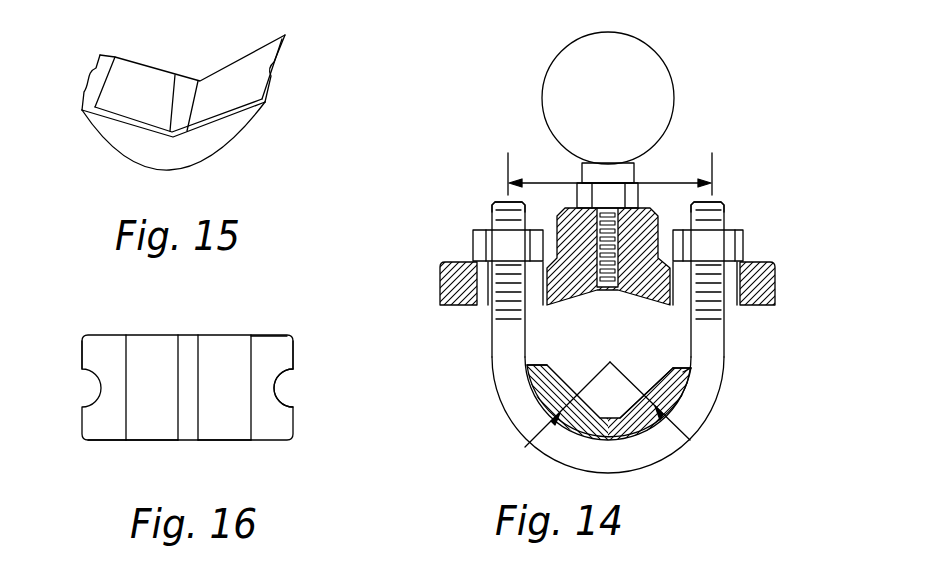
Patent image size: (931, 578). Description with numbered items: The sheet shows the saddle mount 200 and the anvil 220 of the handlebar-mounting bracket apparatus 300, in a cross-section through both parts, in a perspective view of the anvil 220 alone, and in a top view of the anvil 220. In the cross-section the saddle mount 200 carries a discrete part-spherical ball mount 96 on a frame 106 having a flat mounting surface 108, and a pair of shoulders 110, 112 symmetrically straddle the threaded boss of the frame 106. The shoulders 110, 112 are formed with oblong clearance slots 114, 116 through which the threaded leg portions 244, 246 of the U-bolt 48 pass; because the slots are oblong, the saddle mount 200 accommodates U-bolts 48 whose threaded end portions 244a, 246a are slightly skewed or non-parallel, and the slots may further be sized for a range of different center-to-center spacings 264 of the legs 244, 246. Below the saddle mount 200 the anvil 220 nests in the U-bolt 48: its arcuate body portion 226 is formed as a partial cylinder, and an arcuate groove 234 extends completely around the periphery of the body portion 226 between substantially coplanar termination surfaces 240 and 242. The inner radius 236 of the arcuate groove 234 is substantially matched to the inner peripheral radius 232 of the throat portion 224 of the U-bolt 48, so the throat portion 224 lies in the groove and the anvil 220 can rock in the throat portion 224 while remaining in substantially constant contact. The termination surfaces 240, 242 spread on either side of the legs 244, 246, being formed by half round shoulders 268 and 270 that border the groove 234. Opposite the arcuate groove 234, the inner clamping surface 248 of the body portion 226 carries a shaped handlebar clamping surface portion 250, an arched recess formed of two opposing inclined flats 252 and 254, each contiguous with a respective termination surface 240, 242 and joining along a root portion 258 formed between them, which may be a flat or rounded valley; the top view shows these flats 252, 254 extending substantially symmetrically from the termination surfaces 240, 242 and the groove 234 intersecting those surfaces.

In FIG. 14, the U-bolt 48 is at (609, 335).
In FIG. 14, the part-spherical ball mount 96 is at (674, 108).
In FIG. 14, the frame 106 is at (440, 283).
In FIG. 14, the mounting surface 108 is at (768, 305).
In FIG. 14, the shoulder 110 is at (564, 256).
In FIG. 14, the shoulder 112 is at (783, 282).
In FIG. 14, the oblong clearance slot 114 is at (485, 278).
In FIG. 14, the oblong clearance slot 116 is at (733, 275).
In FIG. 14, the saddle mount 200 is at (630, 120).
In FIG. 15, the anvil 220 is at (168, 157).
In FIG. 16, the anvil 220 is at (198, 384).
In FIG. 14, the anvil 220 is at (625, 405).
In FIG. 14, the throat portion 224 is at (611, 335).
In FIG. 16, the body portion 226 is at (107, 440).
In FIG. 14, the body portion 226 is at (683, 372).
In FIG. 14, the inner peripheral radius 232 is at (690, 440).
In FIG. 16, the arcuate groove 234 is at (282, 395).
In FIG. 14, the arcuate groove 234 is at (690, 400).
In FIG. 14, the inner radius 236 is at (525, 447).
In FIG. 16, the termination surface 240 is at (107, 343).
In FIG. 14, the termination surface 240 is at (527, 365).
In FIG. 16, the termination surface 242 is at (265, 343).
In FIG. 14, the termination surface 242 is at (683, 362).
In FIG. 14, the threaded leg portion 244 is at (478, 260).
In FIG. 14, the threaded end portion 244a is at (493, 202).
In FIG. 14, the threaded leg portion 246 is at (740, 260).
In FIG. 14, the threaded end portion 246a is at (727, 202).
In FIG. 16, the inner clamping surface 248 is at (222, 352).
In FIG. 16, the shaped handlebar clamping surface portion 250 is at (145, 345).
In FIG. 16, the flat 252 is at (155, 440).
In FIG. 16, the flat 254 is at (222, 438).
In FIG. 16, the root portion 258 is at (187, 435).
In FIG. 14, the center-to-center spacing 264 is at (548, 182).
In FIG. 16, the half round shoulder 268 is at (82, 340).
In FIG. 16, the half round shoulder 270 is at (295, 345).
In FIG. 14, the handlebar-mounting bracket apparatus 300 is at (778, 104).